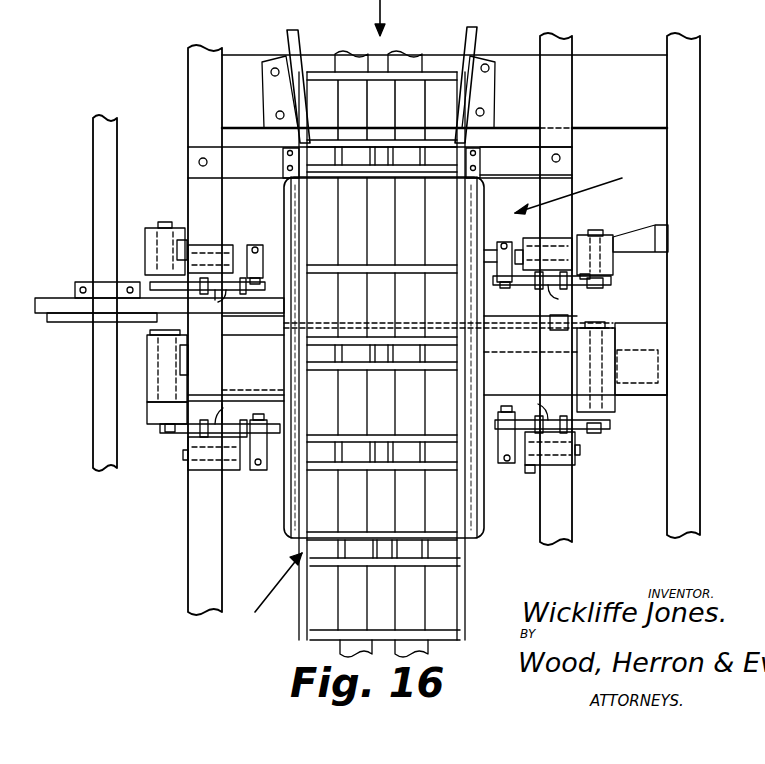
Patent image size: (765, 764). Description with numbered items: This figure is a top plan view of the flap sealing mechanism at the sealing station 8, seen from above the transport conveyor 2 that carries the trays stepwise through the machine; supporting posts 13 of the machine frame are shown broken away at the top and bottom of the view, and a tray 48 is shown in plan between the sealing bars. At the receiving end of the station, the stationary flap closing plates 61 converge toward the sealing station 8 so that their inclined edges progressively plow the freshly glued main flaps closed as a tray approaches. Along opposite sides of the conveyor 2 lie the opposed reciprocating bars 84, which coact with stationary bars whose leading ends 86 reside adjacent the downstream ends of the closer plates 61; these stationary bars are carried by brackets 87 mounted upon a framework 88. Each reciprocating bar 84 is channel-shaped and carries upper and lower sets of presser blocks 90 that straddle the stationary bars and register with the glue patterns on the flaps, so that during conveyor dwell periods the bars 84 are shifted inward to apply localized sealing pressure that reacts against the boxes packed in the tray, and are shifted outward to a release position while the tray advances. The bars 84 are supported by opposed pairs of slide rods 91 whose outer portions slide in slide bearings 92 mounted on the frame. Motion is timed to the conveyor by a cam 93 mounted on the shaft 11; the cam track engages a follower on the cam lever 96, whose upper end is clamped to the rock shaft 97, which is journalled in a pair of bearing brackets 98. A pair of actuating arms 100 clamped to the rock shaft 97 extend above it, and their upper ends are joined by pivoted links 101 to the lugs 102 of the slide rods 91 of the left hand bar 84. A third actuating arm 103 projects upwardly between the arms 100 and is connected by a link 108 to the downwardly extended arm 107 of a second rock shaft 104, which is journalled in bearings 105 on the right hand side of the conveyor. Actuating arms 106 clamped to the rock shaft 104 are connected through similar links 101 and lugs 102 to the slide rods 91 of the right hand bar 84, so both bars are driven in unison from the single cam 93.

The transport conveyor 2 is at (271, 591).
The sealing station 8 is at (574, 187).
The shaft 11 is at (97, 137).
The frame posts 13 is at (350, 55).
The pallet platform 48 is at (432, 95).
The stationary flap closing plates 61 is at (291, 35).
The reciprocating bars 84 is at (283, 200).
The leading ends 86 is at (283, 161).
The brackets 87 is at (285, 112).
The framework 88 is at (532, 153).
The presser blocks 90 is at (305, 233).
The slide rods 91 is at (522, 241).
The slide bearings 92 is at (206, 244).
The cam 93 is at (72, 307).
The cam lever 96 is at (80, 323).
The rock shaft 97 is at (164, 227).
The bearing brackets 98 is at (145, 250).
The actuating arms 100 is at (150, 287).
The pivoted links 101 is at (222, 290).
The lugs 102 is at (255, 245).
The third actuating arm 103 is at (147, 337).
The rock shaft 104 is at (598, 233).
The bearings 105 is at (648, 239).
The actuating arms 106 is at (603, 283).
The downwardly extended arm 107 is at (610, 328).
The link 108 is at (548, 329).